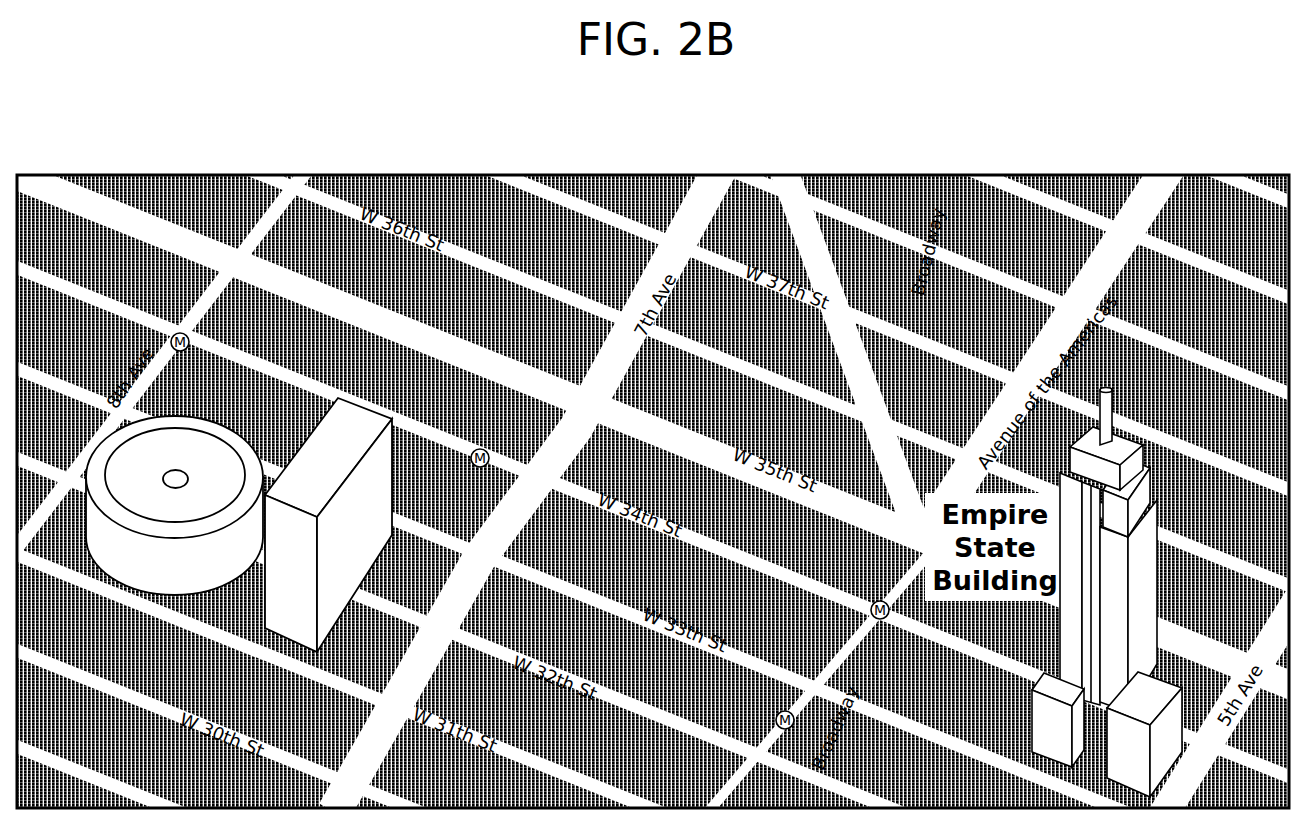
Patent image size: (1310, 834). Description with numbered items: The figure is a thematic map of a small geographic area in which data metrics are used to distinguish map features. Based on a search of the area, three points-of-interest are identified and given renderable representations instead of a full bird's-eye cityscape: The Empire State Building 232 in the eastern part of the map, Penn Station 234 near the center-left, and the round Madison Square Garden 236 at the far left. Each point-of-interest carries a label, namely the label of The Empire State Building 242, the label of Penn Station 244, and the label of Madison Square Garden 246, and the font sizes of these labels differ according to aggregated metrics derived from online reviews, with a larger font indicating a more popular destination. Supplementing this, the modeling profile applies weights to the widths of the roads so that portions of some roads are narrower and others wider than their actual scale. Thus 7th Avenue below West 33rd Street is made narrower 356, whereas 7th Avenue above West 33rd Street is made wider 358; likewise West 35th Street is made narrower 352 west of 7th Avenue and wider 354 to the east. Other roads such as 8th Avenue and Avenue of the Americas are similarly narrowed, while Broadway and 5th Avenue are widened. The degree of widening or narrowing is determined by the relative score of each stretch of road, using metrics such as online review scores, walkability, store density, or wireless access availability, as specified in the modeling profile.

The Empire State Building 232 is at (1130, 442).
The Penn Station 234 is at (357, 423).
The Madison Square Garden 236 is at (213, 427).
The label of The Empire State Building 242 is at (927, 543).
The label of Penn Station 244 is at (392, 584).
The label of Madison Square Garden 246 is at (148, 612).
The narrower portion of West 35th Street 352 is at (498, 358).
The wider portion of West 35th Street 354 is at (677, 430).
The narrower portion of 7th Avenue 356 is at (332, 729).
The wider portion of 7th Avenue 358 is at (509, 504).